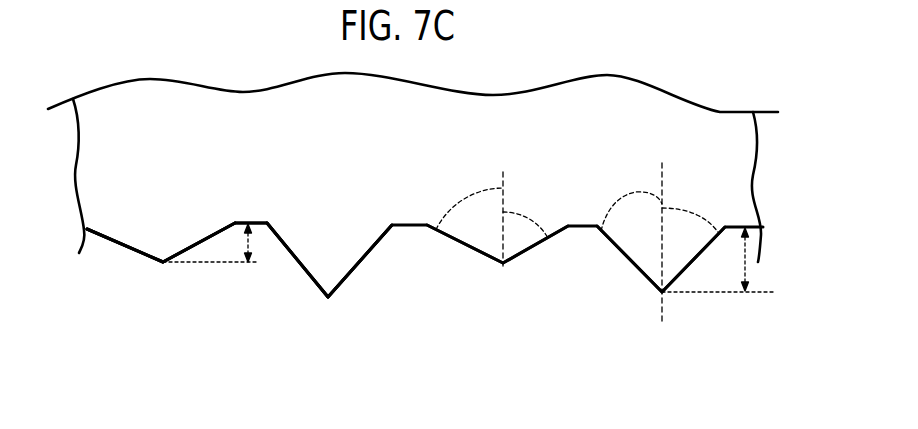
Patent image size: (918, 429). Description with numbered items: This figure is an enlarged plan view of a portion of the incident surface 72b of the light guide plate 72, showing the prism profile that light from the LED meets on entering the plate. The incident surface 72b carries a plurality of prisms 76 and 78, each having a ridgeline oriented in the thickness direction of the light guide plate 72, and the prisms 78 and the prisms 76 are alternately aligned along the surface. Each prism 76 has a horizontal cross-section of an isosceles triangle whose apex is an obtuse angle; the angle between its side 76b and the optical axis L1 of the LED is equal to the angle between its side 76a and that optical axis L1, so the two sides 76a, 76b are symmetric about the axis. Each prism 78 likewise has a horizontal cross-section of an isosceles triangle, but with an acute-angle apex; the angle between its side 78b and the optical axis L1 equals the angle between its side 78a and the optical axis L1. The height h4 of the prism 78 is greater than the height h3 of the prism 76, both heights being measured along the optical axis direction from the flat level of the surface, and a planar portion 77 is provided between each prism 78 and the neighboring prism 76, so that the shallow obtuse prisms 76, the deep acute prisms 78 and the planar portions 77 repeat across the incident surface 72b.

The light guide plate 72 is at (337, 128).
The incident surface 72b is at (429, 322).
The prism 76 is at (164, 273).
The side of prism 76 76a is at (112, 240).
The side of prism 76 76b is at (213, 235).
The planar portion 77 is at (258, 222).
The prism 78 is at (329, 309).
The side of prism 78 78a is at (287, 247).
The side of prism 78 78b is at (368, 252).
The height of prism 76 h3 is at (252, 240).
The height of prism 78 h4 is at (747, 268).
The optical axis of the LED L1 is at (503, 266).